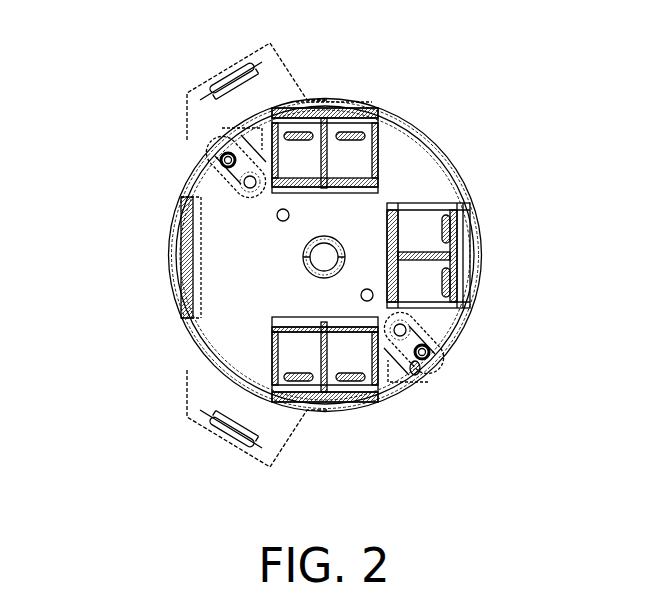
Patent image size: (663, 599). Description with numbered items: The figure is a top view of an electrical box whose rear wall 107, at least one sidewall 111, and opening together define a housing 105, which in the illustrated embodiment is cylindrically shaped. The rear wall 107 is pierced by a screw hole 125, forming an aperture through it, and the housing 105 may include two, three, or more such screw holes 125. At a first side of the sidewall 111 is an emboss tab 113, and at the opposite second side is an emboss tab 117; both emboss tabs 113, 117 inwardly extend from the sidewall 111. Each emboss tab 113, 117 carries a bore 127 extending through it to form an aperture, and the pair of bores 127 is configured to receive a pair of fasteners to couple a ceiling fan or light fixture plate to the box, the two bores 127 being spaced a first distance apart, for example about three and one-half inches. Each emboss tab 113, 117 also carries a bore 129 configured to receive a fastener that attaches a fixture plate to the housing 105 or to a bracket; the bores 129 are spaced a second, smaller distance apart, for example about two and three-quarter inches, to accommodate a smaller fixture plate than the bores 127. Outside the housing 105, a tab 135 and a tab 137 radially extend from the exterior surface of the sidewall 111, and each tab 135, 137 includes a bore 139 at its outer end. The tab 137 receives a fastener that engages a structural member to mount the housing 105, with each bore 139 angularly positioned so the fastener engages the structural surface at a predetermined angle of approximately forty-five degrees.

The housing 105 is at (450, 163).
The rear wall 107 is at (396, 150).
The sidewall 111 is at (476, 241).
The emboss tab 113 is at (240, 171).
The emboss tab 117 is at (411, 364).
The screw hole 125 is at (277, 214).
The bore 127 is at (221, 158).
The bore 129 is at (244, 184).
The tab 135 is at (296, 78).
The tab 137 is at (186, 358).
The bore 139 is at (252, 65).